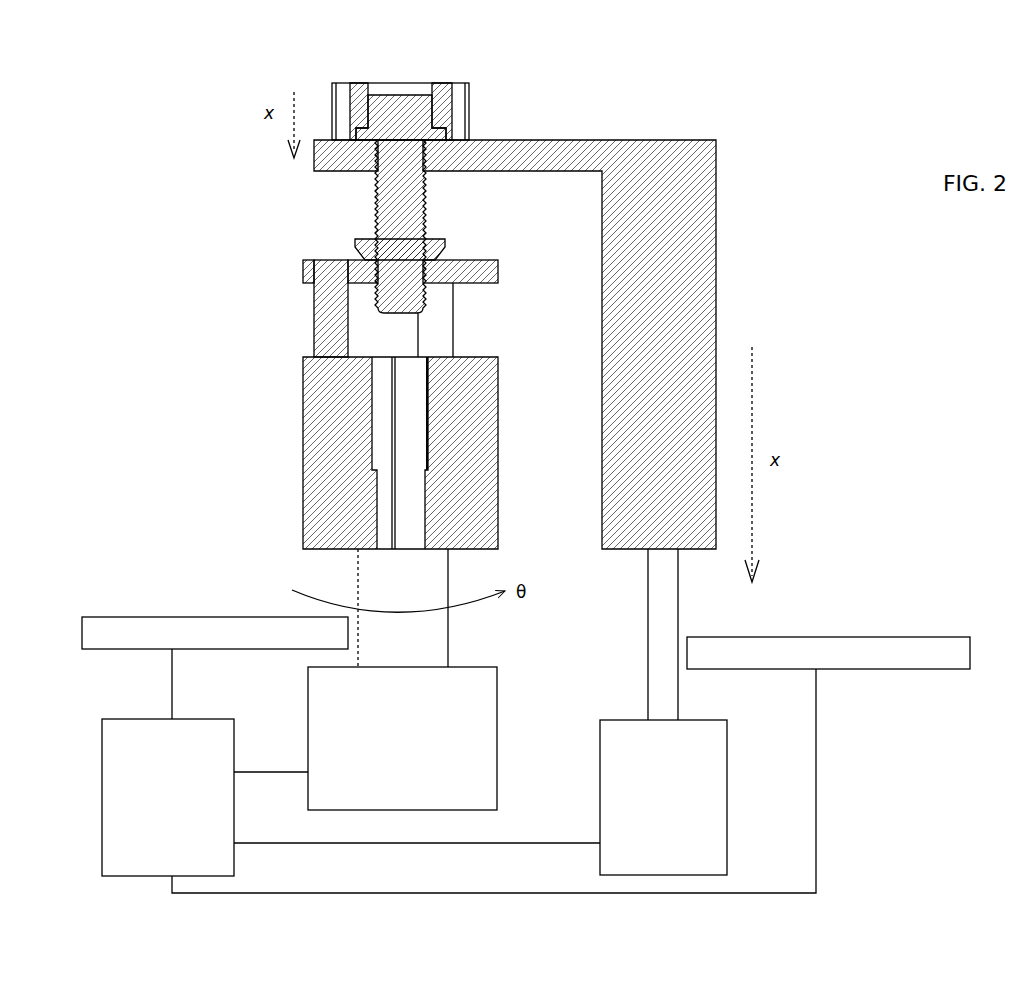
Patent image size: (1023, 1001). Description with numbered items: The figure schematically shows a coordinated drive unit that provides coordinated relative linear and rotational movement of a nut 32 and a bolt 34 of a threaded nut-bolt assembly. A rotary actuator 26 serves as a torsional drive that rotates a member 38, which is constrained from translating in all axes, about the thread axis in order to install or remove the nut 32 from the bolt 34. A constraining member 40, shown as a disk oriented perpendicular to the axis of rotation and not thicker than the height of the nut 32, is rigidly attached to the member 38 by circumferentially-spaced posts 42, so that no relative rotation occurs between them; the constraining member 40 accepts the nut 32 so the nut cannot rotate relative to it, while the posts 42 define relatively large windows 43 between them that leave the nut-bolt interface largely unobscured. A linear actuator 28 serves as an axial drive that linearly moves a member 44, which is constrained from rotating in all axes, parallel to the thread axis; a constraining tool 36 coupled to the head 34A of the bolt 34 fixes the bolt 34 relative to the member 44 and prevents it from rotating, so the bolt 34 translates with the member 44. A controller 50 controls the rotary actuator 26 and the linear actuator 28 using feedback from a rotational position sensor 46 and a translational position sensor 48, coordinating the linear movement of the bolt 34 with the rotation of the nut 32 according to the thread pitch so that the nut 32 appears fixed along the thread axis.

The rotary actuator 26 is at (402, 738).
The linear actuator 28 is at (663, 797).
The nut 32 is at (352, 248).
The bolt 34 is at (378, 218).
The head 34A is at (404, 103).
The constraining tool 36 is at (467, 83).
The member 38 is at (303, 369).
The constraining member 40 is at (303, 272).
The posts 42 is at (314, 323).
The windows 43 is at (482, 313).
The member 44 is at (718, 282).
The rotational position sensor 46 is at (137, 620).
The translational position sensor 48 is at (964, 645).
The controller 50 is at (168, 797).